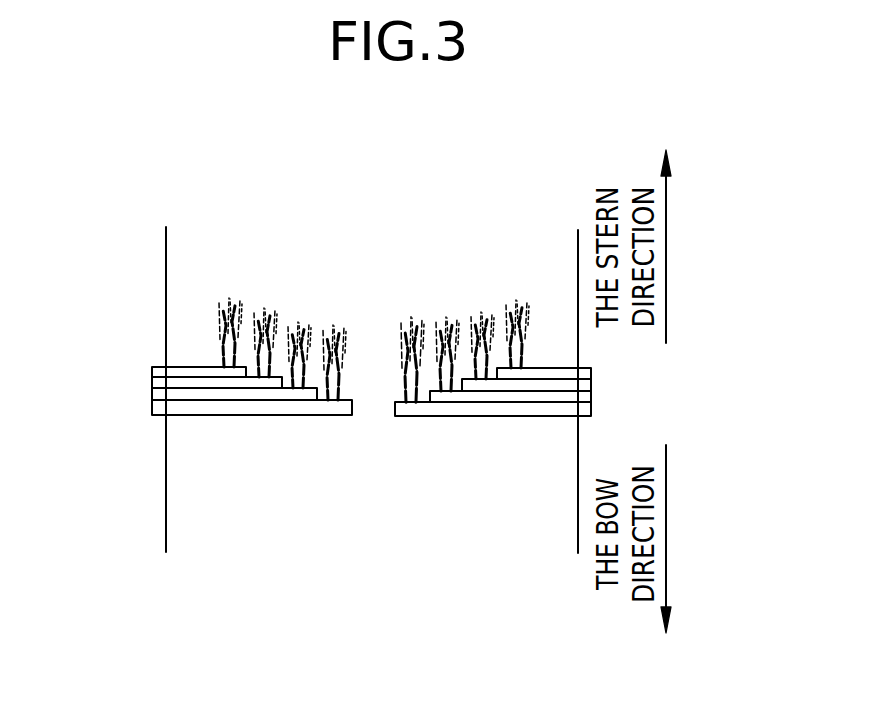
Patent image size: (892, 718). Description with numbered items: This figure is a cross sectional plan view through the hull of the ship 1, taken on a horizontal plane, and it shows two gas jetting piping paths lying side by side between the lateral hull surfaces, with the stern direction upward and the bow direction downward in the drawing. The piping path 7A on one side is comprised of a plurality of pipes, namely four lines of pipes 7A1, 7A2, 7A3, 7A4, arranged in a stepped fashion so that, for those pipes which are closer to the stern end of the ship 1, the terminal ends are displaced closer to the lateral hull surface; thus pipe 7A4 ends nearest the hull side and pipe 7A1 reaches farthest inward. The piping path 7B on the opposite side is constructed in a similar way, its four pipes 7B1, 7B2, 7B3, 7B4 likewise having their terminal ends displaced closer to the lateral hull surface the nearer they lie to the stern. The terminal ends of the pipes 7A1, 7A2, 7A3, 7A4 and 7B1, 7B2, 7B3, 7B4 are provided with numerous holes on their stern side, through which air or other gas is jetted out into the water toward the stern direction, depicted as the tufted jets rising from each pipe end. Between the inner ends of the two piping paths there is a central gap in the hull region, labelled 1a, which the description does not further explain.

The ship 1 is at (166, 265).
The opening between brush units 1a is at (380, 493).
The piping path 7A is at (215, 372).
The pipe 7A1 is at (335, 407).
The pipe 7A2 is at (300, 390).
The pipe 7A3 is at (262, 387).
The pipe 7A4 is at (193, 367).
The piping path 7B is at (542, 372).
The pipe 7B1 is at (411, 413).
The pipe 7B2 is at (452, 400).
The pipe 7B3 is at (503, 386).
The pipe 7B4 is at (553, 373).